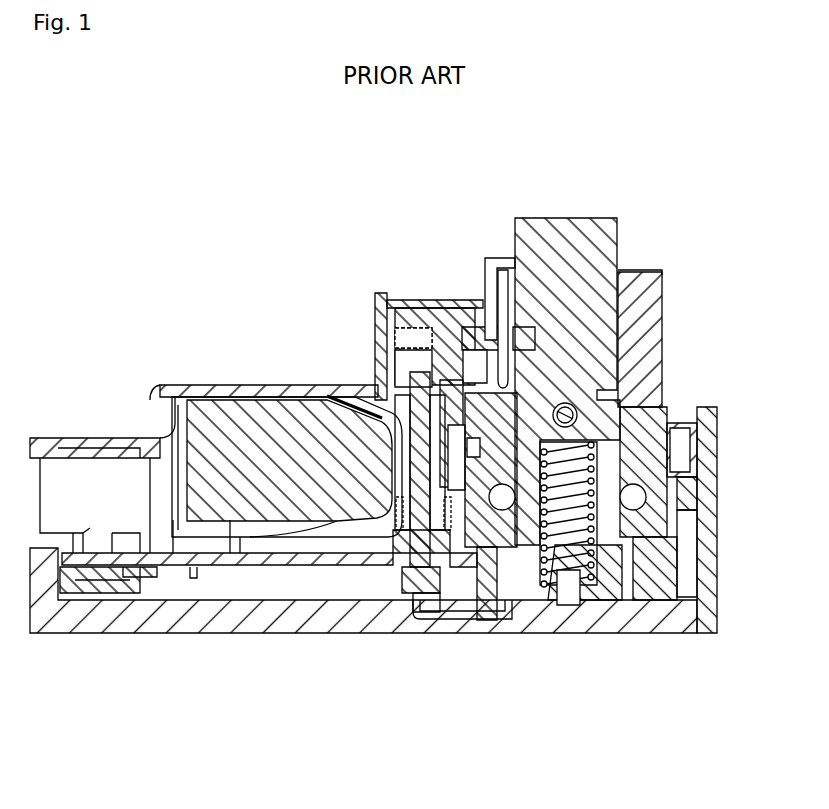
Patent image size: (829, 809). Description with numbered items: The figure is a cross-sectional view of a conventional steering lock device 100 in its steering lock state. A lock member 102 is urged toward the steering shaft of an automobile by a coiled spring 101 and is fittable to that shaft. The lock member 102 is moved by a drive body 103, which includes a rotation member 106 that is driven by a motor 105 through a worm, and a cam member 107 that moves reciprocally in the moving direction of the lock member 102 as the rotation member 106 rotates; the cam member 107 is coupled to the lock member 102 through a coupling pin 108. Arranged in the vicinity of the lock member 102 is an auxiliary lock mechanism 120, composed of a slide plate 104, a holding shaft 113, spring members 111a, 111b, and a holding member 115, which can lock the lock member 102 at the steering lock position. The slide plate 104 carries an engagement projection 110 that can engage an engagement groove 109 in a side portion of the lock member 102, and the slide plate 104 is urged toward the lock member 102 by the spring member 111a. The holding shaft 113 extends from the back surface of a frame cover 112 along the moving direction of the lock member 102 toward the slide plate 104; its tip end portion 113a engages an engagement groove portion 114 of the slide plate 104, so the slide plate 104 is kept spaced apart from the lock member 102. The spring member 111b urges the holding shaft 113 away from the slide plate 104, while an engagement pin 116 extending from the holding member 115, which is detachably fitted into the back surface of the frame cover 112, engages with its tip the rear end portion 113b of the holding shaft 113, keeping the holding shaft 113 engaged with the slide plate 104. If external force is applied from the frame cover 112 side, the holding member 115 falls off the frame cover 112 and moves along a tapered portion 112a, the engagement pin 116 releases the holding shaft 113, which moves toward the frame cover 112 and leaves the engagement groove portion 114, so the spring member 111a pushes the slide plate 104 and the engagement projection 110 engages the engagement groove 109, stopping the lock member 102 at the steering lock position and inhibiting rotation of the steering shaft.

The steering lock device 100 is at (663, 170).
The coiled spring 101 is at (646, 495).
The lock member 102 is at (564, 217).
The drive body 103 is at (203, 385).
The slide plate 104 is at (452, 340).
The motor 105 is at (218, 452).
The rotation member 106 is at (680, 450).
The cam member 107 is at (512, 533).
The coupling pin 108 is at (622, 405).
The engagement groove 109 is at (507, 330).
The engagement projection 110 is at (500, 300).
The spring member 111a is at (405, 333).
The spring member 111b is at (398, 530).
The frame cover 112 is at (148, 622).
The tapered portion 112a is at (610, 583).
The holding shaft 113 is at (445, 560).
The tip end portion 113a is at (400, 375).
The rear end portion 113b is at (400, 560).
The engagement groove portion 114 is at (418, 335).
The holding member 115 is at (490, 622).
The engagement pin 116 is at (418, 605).
The auxiliary lock mechanism 120 is at (366, 256).